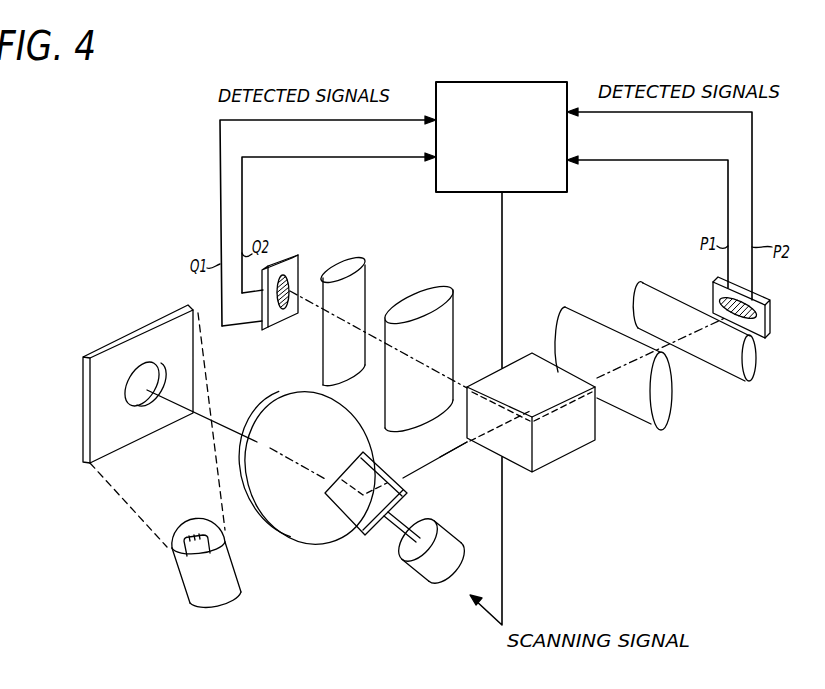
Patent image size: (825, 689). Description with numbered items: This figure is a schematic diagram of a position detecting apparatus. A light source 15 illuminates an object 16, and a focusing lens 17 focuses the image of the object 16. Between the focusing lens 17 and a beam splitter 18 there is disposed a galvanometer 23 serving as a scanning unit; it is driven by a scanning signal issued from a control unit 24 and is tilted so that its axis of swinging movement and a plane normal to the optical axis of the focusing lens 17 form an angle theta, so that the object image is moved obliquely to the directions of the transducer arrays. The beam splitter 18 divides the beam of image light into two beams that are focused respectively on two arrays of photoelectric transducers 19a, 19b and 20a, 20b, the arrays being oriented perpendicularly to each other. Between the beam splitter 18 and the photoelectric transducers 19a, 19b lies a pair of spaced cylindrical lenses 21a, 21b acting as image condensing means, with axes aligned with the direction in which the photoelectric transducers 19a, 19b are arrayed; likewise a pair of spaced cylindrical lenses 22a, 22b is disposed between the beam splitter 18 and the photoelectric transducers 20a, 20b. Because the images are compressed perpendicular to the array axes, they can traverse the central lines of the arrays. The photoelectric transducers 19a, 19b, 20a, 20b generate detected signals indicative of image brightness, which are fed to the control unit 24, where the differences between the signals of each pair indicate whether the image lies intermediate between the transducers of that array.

The light source 15 is at (183, 587).
The object 16 is at (141, 363).
The focusing lens 17 is at (315, 533).
The beam splitter 18 is at (565, 450).
The photoelectric transducer 19a is at (713, 292).
The photoelectric transducer 19b is at (768, 335).
The photoelectric transducer 20a is at (287, 318).
The photoelectric transducer 20b is at (290, 253).
The cylindrical lens 21a is at (650, 420).
The cylindrical lens 21b is at (737, 377).
The cylindrical lens 22a is at (433, 297).
The cylindrical lens 22b is at (358, 260).
The galvanometer 23 is at (415, 585).
The control unit 24 is at (481, 81).